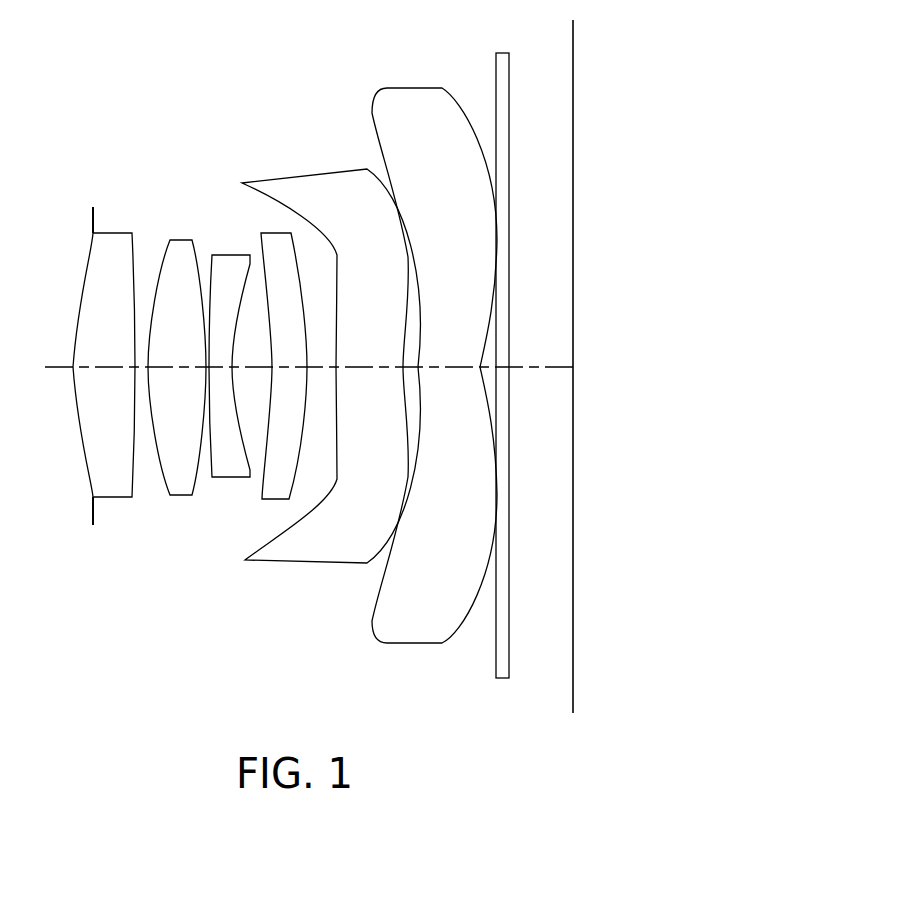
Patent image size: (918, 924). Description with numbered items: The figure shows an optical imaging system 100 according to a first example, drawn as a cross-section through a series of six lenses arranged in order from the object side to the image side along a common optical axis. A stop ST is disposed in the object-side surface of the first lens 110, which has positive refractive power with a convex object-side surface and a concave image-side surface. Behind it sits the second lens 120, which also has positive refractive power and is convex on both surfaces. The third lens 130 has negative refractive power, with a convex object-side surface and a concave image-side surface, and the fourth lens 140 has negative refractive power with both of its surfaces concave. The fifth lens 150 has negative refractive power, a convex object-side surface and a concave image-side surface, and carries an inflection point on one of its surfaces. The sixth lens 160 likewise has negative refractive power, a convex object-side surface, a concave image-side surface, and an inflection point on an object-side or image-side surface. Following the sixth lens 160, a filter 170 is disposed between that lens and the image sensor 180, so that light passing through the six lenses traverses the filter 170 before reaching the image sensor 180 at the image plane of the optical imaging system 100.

The optical imaging system 100 is at (203, 104).
The stop ST is at (93, 217).
The first lens 110 is at (105, 499).
The second lens 120 is at (180, 496).
The third lens 130 is at (225, 478).
The fourth lens 140 is at (270, 500).
The fifth lens 150 is at (305, 565).
The sixth lens 160 is at (400, 645).
The filter 170 is at (496, 668).
The image sensor 180 is at (572, 688).